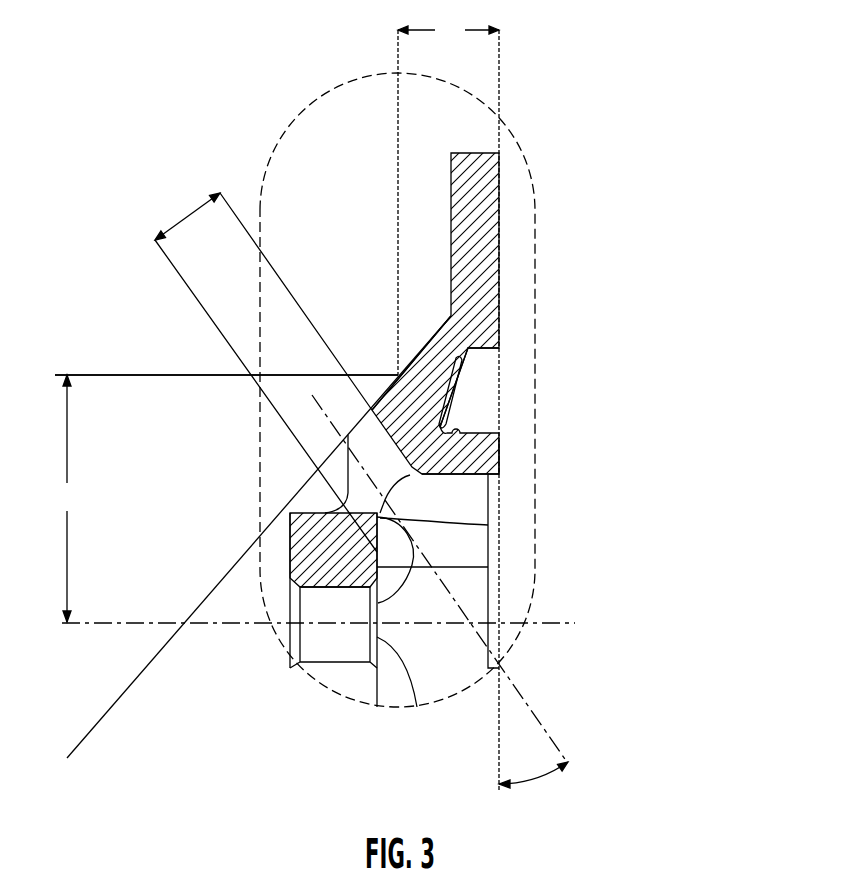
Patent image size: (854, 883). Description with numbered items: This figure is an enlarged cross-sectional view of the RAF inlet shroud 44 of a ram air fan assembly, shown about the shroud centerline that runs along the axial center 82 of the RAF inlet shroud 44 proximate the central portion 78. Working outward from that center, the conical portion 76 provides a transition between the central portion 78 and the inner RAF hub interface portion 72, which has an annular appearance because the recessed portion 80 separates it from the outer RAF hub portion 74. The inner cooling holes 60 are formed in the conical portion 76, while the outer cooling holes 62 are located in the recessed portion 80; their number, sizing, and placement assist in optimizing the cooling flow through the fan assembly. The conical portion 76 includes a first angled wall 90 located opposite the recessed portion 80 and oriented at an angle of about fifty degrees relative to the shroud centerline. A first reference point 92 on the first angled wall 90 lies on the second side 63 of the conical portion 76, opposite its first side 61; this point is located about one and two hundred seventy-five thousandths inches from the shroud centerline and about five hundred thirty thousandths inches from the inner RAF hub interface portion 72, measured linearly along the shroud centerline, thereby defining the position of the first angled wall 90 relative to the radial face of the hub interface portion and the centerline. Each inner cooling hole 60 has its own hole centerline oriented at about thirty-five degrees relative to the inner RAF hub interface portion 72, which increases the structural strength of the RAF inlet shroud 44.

The RAF inlet shroud 44 is at (643, 118).
The inner cooling holes 60 is at (430, 476).
The first side 61 is at (394, 490).
The outer cooling holes 62 is at (450, 400).
The second side 63 is at (347, 476).
The inner RAF hub interface portion 72 is at (500, 458).
The outer RAF hub portion 74 is at (499, 292).
The conical portion 76 is at (488, 525).
The central portion 78 is at (488, 567).
The recessed portion 80 is at (483, 360).
The axial center 82 is at (543, 628).
The first angled wall 90 is at (437, 332).
The first reference point 92 is at (398, 375).